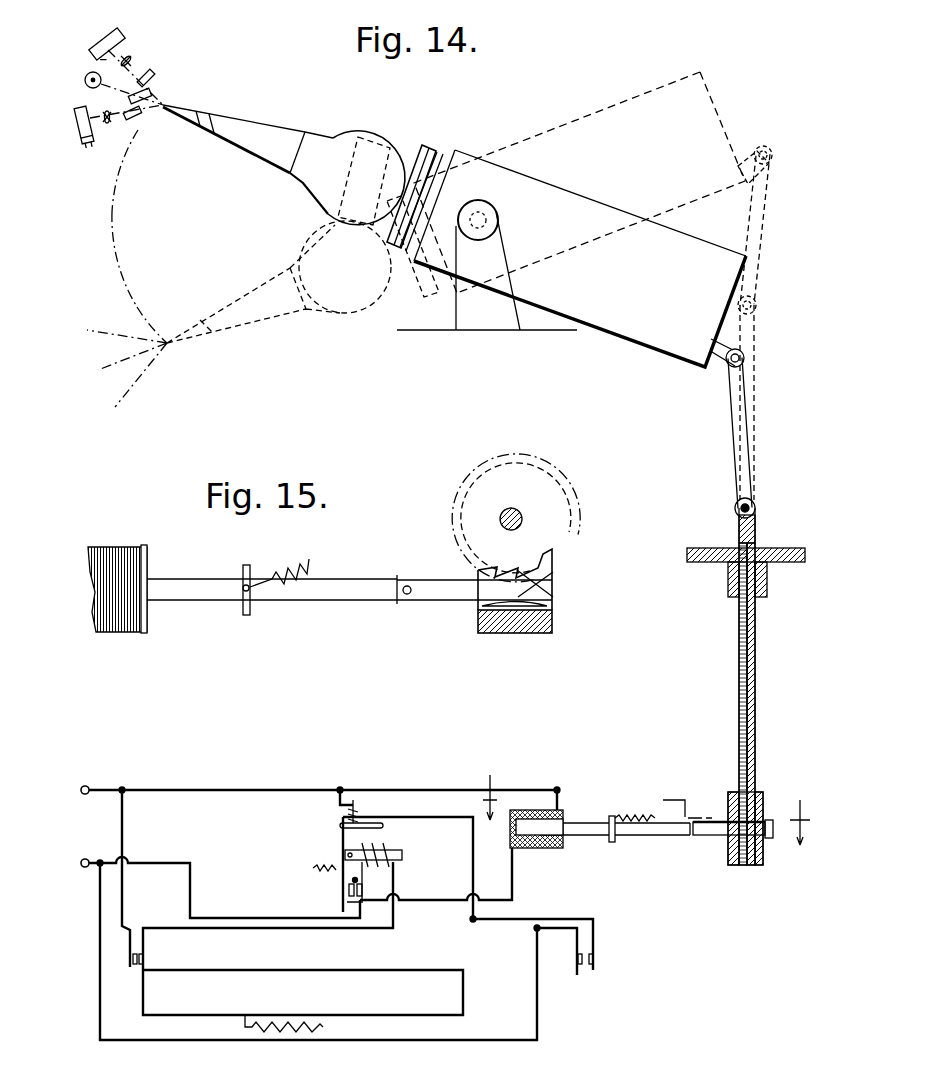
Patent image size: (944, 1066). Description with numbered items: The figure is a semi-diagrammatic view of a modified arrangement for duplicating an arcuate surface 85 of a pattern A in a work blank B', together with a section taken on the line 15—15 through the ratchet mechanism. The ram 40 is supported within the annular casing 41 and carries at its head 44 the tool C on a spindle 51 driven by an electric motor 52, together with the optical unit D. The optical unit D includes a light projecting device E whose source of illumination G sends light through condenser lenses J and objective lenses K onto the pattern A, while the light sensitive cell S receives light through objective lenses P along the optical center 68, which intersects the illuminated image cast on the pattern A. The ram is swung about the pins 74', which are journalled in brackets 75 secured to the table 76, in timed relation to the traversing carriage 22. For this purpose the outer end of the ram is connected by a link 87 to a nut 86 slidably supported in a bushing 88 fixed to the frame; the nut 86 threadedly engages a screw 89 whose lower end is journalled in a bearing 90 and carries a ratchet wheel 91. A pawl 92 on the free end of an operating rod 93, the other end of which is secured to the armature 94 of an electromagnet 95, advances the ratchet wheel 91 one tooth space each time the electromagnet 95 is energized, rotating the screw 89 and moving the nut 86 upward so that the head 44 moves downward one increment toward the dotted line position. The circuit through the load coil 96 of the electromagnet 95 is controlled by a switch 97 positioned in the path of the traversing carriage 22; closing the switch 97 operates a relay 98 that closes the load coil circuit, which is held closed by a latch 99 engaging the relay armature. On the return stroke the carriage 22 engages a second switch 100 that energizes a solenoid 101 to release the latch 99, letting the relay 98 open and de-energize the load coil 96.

In FIG. 14, the source of illumination G is at (70, 152).
In FIG. 14, the condenser lenses J is at (127, 50).
In FIG. 14, the light projecting device E is at (136, 53).
In FIG. 14, the objective lenses K is at (152, 73).
In FIG. 14, the optical unit D is at (83, 67).
In FIG. 14, the light sensitive cell S is at (84, 81).
In FIG. 14, the objective lenses P is at (155, 94).
In FIG. 14, the tool C is at (197, 111).
In FIG. 14, the optical center 68 is at (78, 109).
In FIG. 14, the spindle 51 is at (237, 145).
In FIG. 14, the electric motor 52 is at (303, 181).
In FIG. 14, the ram 40 is at (433, 150).
In FIG. 14, the head 44 is at (395, 243).
In FIG. 14, the casing 41 is at (560, 188).
In FIG. 14, the pins 74' is at (504, 220).
In FIG. 14, the brackets 75 is at (482, 320).
In FIG. 14, the table 76 is at (430, 330).
In FIG. 14, the arcuate surface 85 is at (112, 213).
In FIG. 14, the pattern A is at (116, 252).
In FIG. 14, the work blank B' is at (253, 282).
In FIG. 14, the link 87 is at (763, 277).
In FIG. 14, the nut 86 is at (756, 385).
In FIG. 14, the bushing 88 is at (728, 582).
In FIG. 14, the screw 89 is at (755, 735).
In FIG. 15, the screw 89 is at (522, 512).
In FIG. 14, the bearing 90 is at (763, 801).
In FIG. 14, the ratchet wheel 91 is at (773, 839).
In FIG. 15, the ratchet wheel 91 is at (566, 528).
In FIG. 14, the pawl 92 is at (722, 840).
In FIG. 15, the pawl 92 is at (555, 588).
In FIG. 14, the operating rod 93 is at (653, 833).
In FIG. 15, the operating rod 93 is at (337, 598).
In FIG. 14, the armature 94 is at (575, 828).
In FIG. 15, the armature 94 is at (158, 594).
In FIG. 14, the electromagnet 95 is at (548, 850).
In FIG. 15, the electromagnet 95 is at (133, 568).
In FIG. 14, the load coil 96 is at (531, 851).
In FIG. 14, the switch 97 is at (133, 972).
In FIG. 14, the relay 98 is at (393, 852).
In FIG. 14, the latch 99 is at (340, 825).
In FIG. 14, the second switch 100 is at (585, 972).
In FIG. 14, the solenoid 101 is at (358, 811).
In FIG. 14, the traversing carriage 22 is at (430, 972).
In FIG. 14, the section line 15 is at (646, 809).